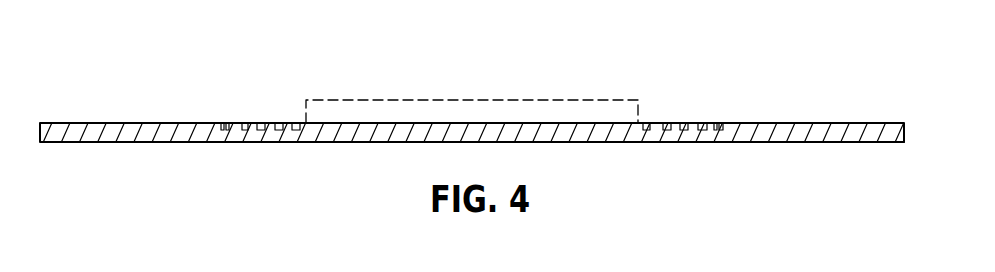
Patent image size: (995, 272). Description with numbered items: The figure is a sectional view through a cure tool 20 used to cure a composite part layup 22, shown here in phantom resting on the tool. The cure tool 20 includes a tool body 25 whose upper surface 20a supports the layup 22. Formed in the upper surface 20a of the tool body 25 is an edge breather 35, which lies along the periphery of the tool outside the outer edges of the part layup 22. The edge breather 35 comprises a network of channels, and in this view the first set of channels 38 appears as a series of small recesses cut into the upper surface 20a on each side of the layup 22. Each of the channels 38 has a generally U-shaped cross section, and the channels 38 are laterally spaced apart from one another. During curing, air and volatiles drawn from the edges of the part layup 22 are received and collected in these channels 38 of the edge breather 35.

The cure tool 20 is at (70, 133).
The upper surface of the tool body 20a is at (178, 113).
The composite part layup 22 is at (452, 100).
The tool body 25 is at (850, 136).
The edge breather 35 is at (715, 105).
The channels 38 is at (244, 123).